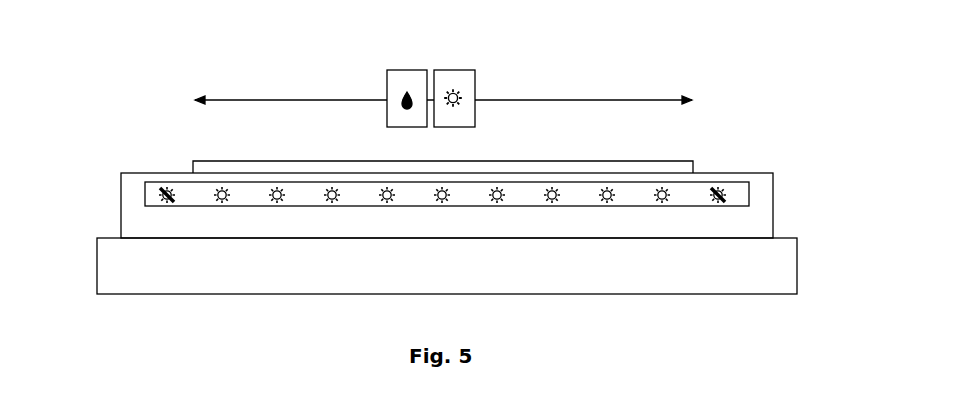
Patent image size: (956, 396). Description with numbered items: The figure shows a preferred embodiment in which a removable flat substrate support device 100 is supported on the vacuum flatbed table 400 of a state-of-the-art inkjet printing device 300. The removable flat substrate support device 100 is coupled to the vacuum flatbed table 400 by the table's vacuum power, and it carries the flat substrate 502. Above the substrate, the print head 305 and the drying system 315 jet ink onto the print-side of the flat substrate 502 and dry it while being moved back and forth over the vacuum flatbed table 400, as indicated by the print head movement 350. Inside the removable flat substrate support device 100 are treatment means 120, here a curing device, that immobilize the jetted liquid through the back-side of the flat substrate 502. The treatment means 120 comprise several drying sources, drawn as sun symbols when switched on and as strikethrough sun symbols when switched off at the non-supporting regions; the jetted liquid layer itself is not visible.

The removable flat substrate support device 100 is at (133, 193).
The treatment means 120 is at (186, 190).
The flat substrate 502 is at (208, 163).
The vacuum flatbed table 400 is at (770, 278).
The print head movement 350 is at (251, 100).
The print head 305 is at (410, 78).
The drying system 315 is at (460, 78).
The inkjet printing device 300 is at (766, 150).